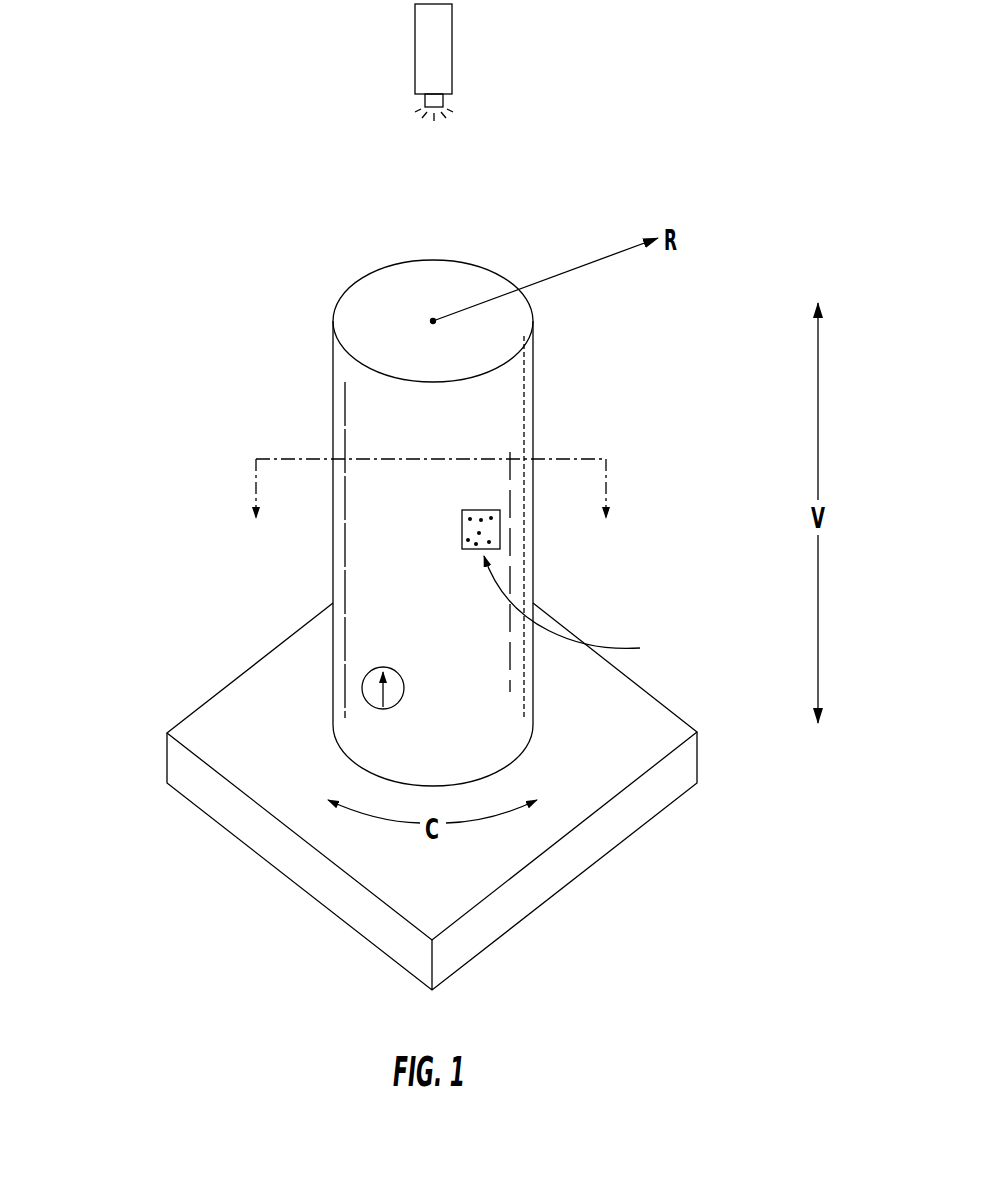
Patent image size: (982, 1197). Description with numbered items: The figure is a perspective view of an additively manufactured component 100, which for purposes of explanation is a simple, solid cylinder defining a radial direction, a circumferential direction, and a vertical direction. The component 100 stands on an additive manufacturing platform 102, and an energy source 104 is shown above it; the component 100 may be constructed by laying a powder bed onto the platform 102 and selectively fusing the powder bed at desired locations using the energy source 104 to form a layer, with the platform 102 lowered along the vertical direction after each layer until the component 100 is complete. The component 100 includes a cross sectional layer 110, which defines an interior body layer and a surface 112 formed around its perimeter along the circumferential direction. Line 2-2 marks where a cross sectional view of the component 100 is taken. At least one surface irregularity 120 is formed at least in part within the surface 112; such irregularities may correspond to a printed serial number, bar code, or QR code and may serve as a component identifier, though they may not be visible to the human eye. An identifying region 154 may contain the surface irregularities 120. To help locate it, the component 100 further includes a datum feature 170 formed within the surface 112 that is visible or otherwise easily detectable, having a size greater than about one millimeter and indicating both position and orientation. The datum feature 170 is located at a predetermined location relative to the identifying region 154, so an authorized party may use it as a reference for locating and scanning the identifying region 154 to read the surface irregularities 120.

The additively manufactured component 100 is at (98, 377).
The additive manufacturing platform 102 is at (177, 722).
The energy source 104 is at (452, 44).
The cross sectional layer 110 is at (375, 523).
The surface 112 is at (333, 370).
The surface irregularity 120 is at (491, 518).
The identifying region 154 is at (585, 611).
The datum feature 170 is at (362, 688).
The Line 2- 2 is at (430, 507).